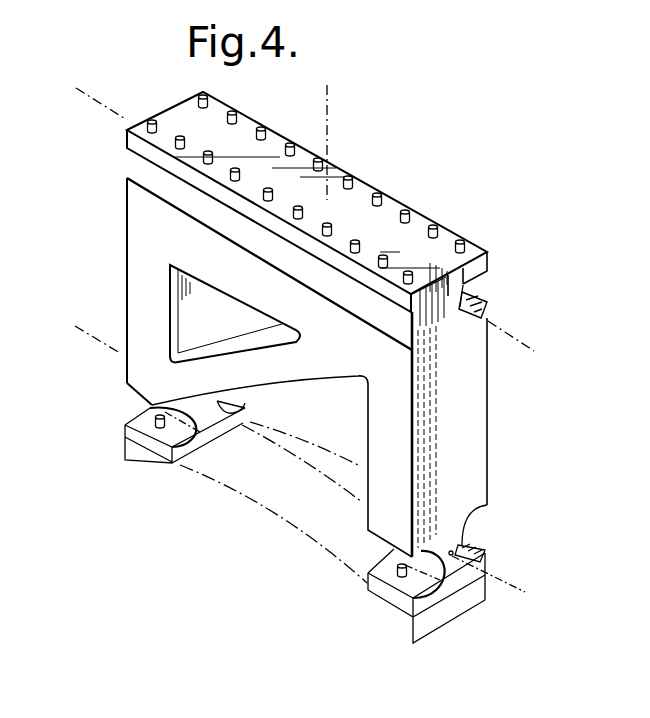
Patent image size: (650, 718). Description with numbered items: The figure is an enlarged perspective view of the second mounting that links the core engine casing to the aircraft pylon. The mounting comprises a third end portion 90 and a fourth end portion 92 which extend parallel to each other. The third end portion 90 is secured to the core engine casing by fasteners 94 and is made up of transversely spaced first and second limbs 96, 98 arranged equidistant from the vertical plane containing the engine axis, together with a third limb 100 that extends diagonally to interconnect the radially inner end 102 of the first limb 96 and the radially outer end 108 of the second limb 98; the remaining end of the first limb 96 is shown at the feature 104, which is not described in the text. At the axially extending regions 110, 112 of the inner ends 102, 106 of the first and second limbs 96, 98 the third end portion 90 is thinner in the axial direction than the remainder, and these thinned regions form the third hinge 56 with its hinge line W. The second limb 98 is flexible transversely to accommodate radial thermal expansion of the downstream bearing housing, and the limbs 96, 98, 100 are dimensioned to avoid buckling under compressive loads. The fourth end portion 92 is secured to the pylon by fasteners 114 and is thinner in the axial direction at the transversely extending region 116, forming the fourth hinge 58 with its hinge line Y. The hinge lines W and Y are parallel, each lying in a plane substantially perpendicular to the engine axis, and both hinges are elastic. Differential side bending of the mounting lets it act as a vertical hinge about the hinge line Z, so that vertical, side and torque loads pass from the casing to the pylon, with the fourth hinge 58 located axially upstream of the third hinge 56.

The fourth hinge 58 is at (152, 170).
The fasteners 114 is at (177, 130).
The left end edge of wall 104 is at (128, 214).
The first limb 96 is at (132, 258).
The radially inner end of the first limb 102 is at (136, 360).
The third limb 100 is at (282, 366).
The radially outer end of the second limb 108 is at (400, 390).
The second limb 98 is at (470, 454).
The inner end of the second limb 106 is at (478, 503).
The transversely extending region 116 is at (462, 290).
The fourth end portion 92 is at (473, 295).
The axially extending region 110 is at (150, 405).
The third hinge 56 is at (130, 412).
The fasteners 94 is at (162, 424).
The third end portion 90 is at (457, 582).
The axially extending region 112 is at (460, 547).
The hinge line W is at (92, 337).
The hinge line Y is at (515, 348).
The hinge line Z is at (330, 104).